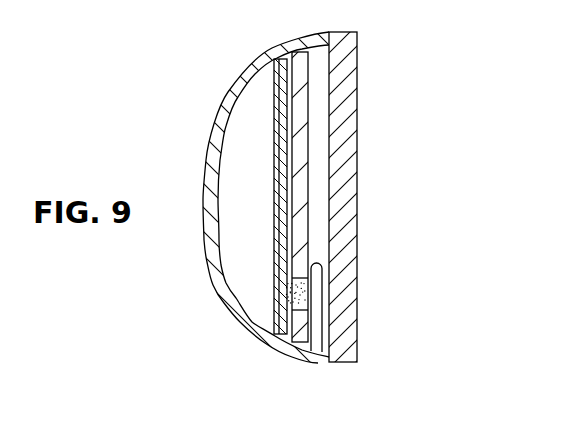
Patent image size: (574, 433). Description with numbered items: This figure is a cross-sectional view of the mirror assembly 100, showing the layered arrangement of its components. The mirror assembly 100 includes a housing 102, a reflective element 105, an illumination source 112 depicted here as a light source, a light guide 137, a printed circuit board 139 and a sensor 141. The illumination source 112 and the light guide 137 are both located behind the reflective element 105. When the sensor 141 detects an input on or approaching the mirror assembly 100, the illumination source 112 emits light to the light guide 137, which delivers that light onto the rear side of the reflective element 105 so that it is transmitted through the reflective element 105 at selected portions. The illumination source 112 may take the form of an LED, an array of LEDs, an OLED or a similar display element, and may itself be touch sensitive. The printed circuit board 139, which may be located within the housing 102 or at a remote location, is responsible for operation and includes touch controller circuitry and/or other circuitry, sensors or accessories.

The mirror assembly 100 is at (287, 216).
The housing 102 is at (224, 92).
The reflective element 105 is at (358, 202).
The light guide 137 is at (303, 43).
The printed circuit board 139 is at (273, 240).
The illumination source 112 is at (281, 296).
The sensor 141 is at (318, 358).